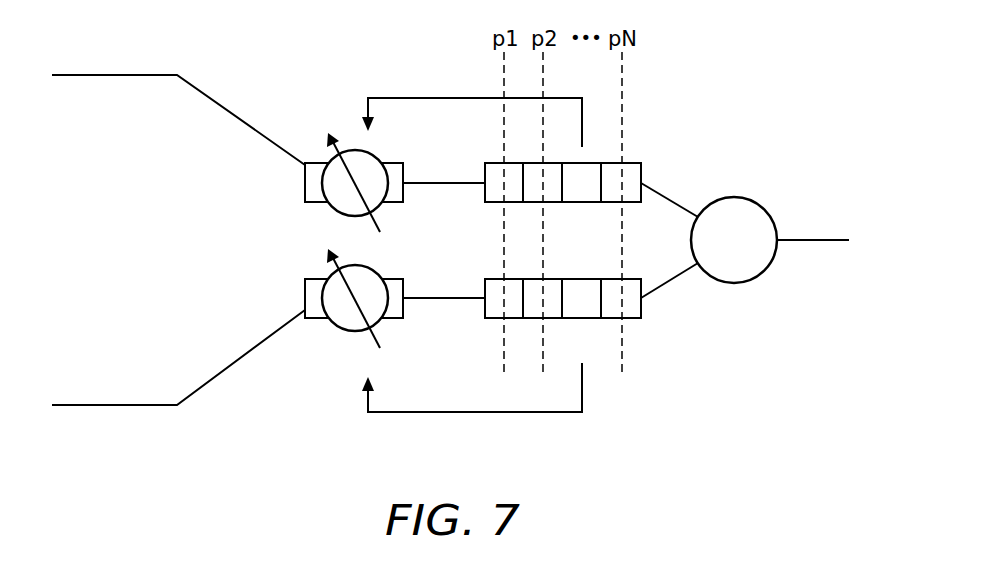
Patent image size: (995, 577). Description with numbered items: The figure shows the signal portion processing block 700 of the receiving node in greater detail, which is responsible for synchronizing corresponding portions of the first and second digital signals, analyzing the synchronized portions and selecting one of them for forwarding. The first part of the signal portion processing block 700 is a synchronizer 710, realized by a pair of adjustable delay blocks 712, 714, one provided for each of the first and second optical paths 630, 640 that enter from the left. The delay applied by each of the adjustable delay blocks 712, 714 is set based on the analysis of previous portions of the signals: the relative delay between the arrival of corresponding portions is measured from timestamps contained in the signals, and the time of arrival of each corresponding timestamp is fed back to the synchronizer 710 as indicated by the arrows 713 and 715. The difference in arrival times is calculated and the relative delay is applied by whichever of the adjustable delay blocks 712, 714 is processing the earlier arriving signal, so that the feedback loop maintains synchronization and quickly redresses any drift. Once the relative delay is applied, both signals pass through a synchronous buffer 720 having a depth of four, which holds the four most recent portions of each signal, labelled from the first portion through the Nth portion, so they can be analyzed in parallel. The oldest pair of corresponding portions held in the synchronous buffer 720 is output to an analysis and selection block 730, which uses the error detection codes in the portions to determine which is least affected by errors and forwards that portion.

The first optical path 630 is at (124, 74).
The second optical path 640 is at (124, 406).
The signal portion processing block 700 is at (314, 447).
The synchronizer 710 is at (313, 66).
The adjustable delay block 712 is at (305, 192).
The arrow 713 is at (393, 96).
The adjustable delay block 714 is at (305, 292).
The arrow 715 is at (399, 414).
The synchronous buffer 720 is at (641, 447).
The analysis and selection block 730 is at (733, 197).